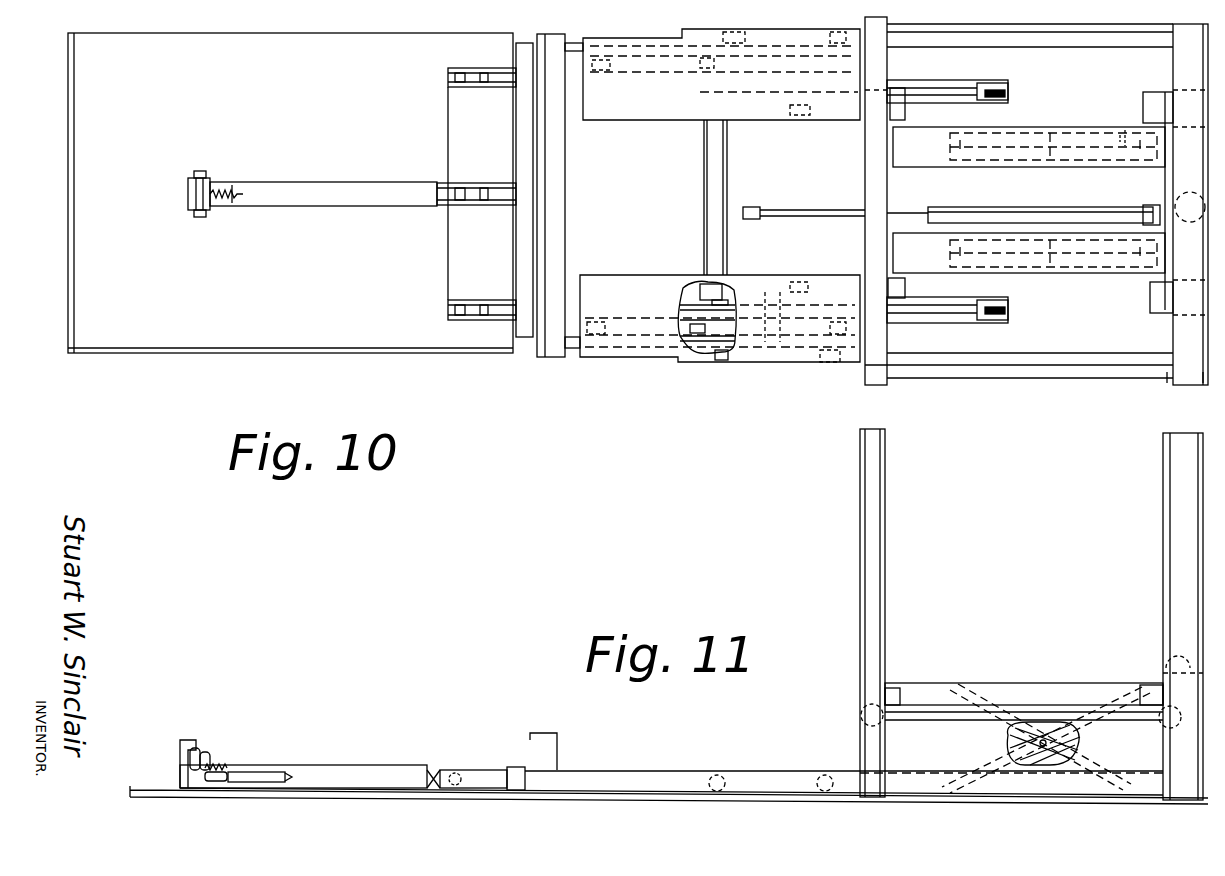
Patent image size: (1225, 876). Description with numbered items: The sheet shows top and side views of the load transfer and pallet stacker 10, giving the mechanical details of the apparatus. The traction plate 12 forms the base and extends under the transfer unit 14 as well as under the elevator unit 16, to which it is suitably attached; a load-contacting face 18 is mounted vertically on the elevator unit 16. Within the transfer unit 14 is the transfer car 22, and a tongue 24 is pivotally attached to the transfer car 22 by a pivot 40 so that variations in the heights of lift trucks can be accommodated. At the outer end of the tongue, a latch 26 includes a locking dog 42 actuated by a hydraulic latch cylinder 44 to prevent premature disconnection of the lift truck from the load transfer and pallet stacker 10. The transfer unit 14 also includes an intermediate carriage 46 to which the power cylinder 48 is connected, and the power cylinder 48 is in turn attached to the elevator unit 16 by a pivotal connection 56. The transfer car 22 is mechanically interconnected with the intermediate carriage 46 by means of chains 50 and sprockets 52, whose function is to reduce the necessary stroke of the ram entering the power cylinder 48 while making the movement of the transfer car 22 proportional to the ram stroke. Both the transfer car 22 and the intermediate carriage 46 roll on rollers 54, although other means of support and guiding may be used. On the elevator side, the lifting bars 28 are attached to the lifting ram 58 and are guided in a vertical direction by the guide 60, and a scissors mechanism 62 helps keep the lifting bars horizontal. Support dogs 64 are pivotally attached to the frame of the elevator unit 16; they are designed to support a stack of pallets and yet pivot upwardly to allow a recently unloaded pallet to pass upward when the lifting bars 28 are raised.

In FIG. 11, the load transfer and pallet stacker 10 is at (594, 803).
In FIG. 10, the traction plate 12 is at (272, 353).
In FIG. 11, the traction plate 12 is at (150, 790).
In FIG. 10, the transfer unit 14 is at (638, 366).
In FIG. 10, the elevator unit 16 is at (1037, 127).
In FIG. 11, the load-contacting face 18 is at (862, 640).
In FIG. 10, the transfer car 22 is at (596, 37).
In FIG. 10, the tongue 24 is at (330, 182).
In FIG. 11, the latch 26 is at (190, 740).
In FIG. 10, the lifting bars 28 is at (1075, 275).
In FIG. 11, the lifting bars 28 is at (990, 683).
In FIG. 10, the pivot 40 is at (440, 188).
In FIG. 11, the pivot 40 is at (432, 768).
In FIG. 11, the locking dog 42 is at (205, 745).
In FIG. 11, the hydraulic latch cylinder 44 is at (265, 770).
In FIG. 10, the intermediate carriage 46 is at (930, 80).
In FIG. 10, the power cylinder 48 is at (1070, 207).
In FIG. 10, the chains 50 is at (930, 312).
In FIG. 10, the sprockets 52 is at (675, 305).
In FIG. 10, the rollers 54 is at (450, 75).
In FIG. 11, the rollers 54 is at (717, 775).
In FIG. 10, the pivotal connection 56 is at (1148, 205).
In FIG. 10, the lifting ram 58 is at (1190, 222).
In FIG. 11, the lifting ram 58 is at (1166, 668).
In FIG. 10, the guide 60 is at (1125, 140).
In FIG. 11, the scissors mechanism 62 is at (1078, 745).
In FIG. 10, the support dogs 64 is at (905, 108).
In FIG. 11, the support dogs 64 is at (880, 715).